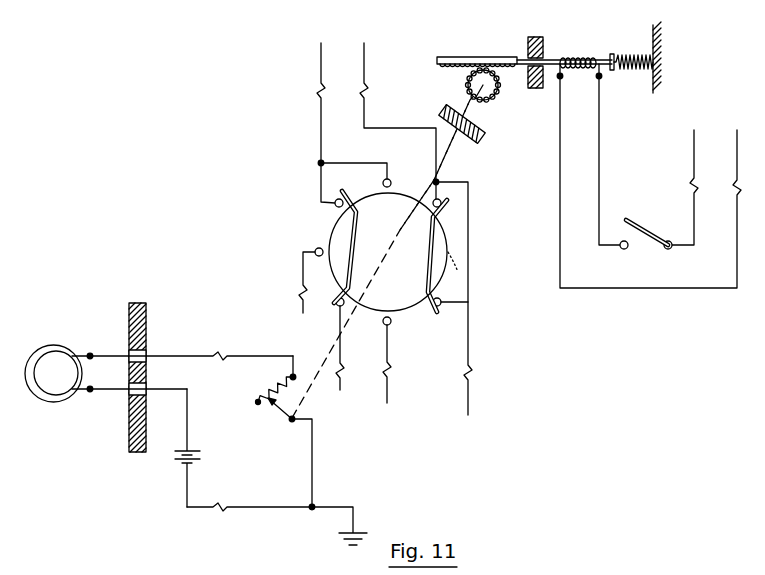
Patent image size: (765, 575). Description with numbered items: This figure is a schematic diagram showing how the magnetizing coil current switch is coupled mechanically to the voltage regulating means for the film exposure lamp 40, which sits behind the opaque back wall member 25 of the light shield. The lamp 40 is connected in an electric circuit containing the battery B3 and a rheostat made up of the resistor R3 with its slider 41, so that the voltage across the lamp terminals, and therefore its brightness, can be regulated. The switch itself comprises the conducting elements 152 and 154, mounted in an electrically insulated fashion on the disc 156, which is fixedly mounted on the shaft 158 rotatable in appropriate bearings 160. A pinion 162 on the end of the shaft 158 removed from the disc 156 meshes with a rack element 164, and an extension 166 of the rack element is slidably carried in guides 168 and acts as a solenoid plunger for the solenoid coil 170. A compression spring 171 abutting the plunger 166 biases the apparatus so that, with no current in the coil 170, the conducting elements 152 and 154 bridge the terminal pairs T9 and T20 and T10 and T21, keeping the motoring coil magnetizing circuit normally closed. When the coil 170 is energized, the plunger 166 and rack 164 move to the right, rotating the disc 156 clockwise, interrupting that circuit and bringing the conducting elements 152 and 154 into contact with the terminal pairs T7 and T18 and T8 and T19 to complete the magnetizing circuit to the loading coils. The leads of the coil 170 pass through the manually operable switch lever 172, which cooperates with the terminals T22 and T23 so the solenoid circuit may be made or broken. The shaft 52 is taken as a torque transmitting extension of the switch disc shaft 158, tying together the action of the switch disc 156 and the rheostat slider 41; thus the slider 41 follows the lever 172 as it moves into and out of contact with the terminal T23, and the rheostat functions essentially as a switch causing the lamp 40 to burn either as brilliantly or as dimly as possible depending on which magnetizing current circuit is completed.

The incandescent lamp 40 is at (70, 346).
The opaque back wall member 25 is at (146, 333).
The lamp battery B3 is at (207, 450).
The resistor R3 is at (271, 389).
The slider 41 is at (278, 411).
The shaft 52 is at (310, 392).
The shaft 158 is at (448, 157).
The conducting element 152 is at (354, 248).
The conducting element 154 is at (425, 252).
The disc 156 is at (415, 313).
The bearings 160 is at (481, 126).
The pinion 162 is at (505, 82).
The rack element 164 is at (455, 67).
The extension of the rack element 166 is at (524, 57).
The guides 168 is at (542, 44).
The solenoid coil 170 is at (577, 56).
The compression spring 171 is at (632, 72).
The magnetizing coil current switching solenoid circuit switch lever 172 is at (647, 230).
The terminal T7 is at (390, 327).
The terminal T8 is at (315, 250).
The terminal T9 is at (441, 298).
The terminal T10 is at (335, 305).
The terminal T18 is at (456, 254).
The terminal T19 is at (392, 179).
The terminal T20 is at (449, 199).
The terminal T21 is at (334, 206).
The terminal T22 is at (671, 251).
The switch point or terminal T23 is at (625, 250).